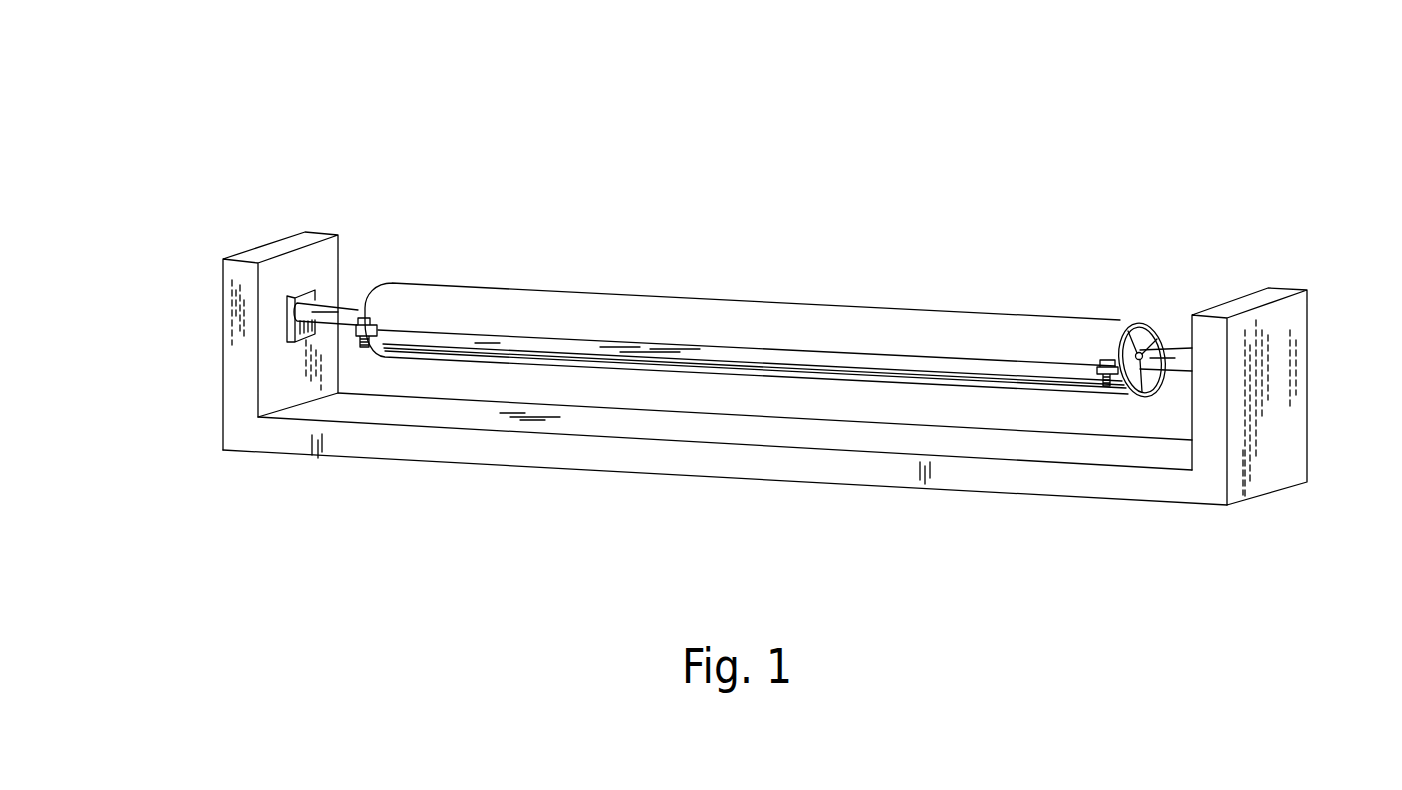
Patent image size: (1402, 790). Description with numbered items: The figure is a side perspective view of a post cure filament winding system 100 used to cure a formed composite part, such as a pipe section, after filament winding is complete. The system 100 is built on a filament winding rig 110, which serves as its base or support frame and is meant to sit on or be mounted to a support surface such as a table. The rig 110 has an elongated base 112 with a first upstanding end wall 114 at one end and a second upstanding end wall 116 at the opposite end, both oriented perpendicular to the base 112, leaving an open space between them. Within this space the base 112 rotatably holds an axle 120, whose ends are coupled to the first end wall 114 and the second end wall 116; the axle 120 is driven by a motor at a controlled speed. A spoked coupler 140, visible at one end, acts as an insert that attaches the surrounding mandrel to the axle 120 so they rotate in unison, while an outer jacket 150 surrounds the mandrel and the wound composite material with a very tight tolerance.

The post cure filament winding system 100 is at (735, 311).
The filament winding rig 110 is at (735, 383).
The elongated base 112 is at (683, 463).
The first upstanding end wall 114 is at (223, 388).
The second upstanding end wall 116 is at (1285, 393).
The axle 120 is at (342, 306).
The coupler 140 is at (1137, 395).
The outer jacket 150 is at (717, 258).